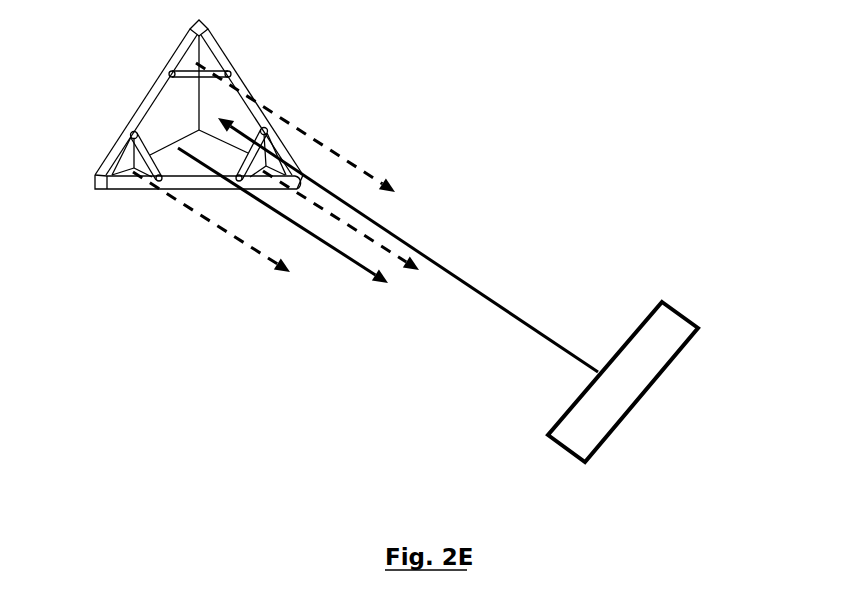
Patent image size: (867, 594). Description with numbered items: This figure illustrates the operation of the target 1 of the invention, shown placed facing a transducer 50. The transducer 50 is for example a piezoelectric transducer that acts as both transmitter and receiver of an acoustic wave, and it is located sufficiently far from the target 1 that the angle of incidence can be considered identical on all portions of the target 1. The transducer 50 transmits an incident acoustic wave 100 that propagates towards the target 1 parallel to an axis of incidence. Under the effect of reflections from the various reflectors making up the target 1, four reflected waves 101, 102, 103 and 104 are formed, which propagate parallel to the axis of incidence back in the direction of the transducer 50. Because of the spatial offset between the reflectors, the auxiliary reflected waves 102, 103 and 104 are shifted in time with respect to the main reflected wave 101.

The target 1 is at (88, 75).
The transducer 50 is at (637, 367).
The incident acoustic wave 100 is at (503, 305).
The main reflected wave 101 is at (368, 270).
The auxiliary reflected wave 102 is at (337, 147).
The auxiliary reflected wave 103 is at (238, 247).
The auxiliary reflected wave 104 is at (401, 242).